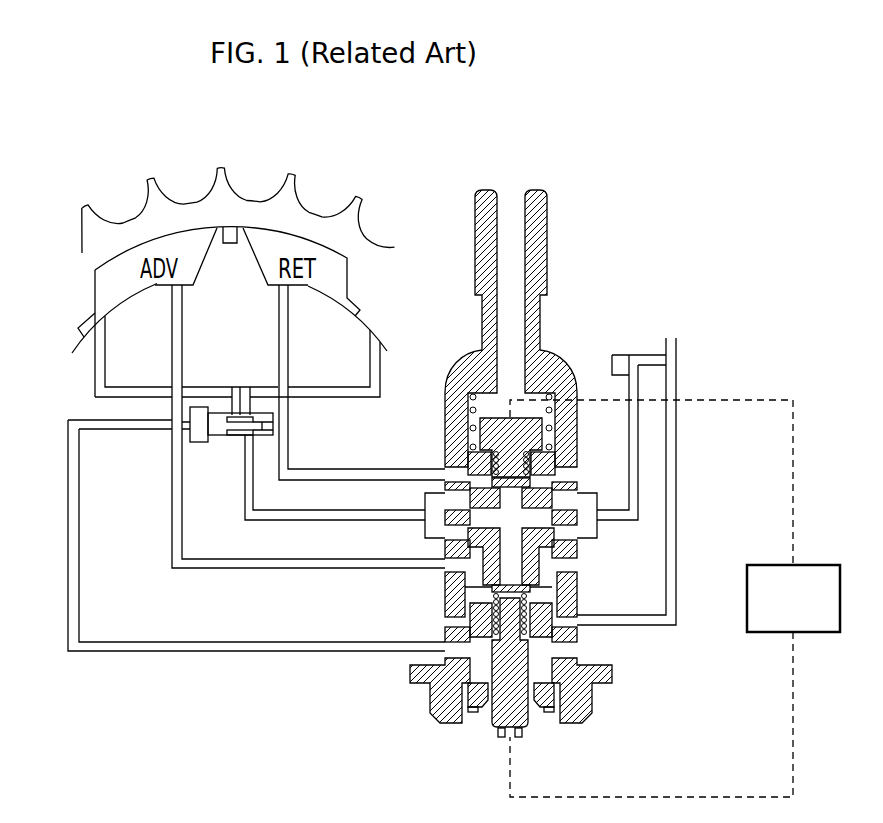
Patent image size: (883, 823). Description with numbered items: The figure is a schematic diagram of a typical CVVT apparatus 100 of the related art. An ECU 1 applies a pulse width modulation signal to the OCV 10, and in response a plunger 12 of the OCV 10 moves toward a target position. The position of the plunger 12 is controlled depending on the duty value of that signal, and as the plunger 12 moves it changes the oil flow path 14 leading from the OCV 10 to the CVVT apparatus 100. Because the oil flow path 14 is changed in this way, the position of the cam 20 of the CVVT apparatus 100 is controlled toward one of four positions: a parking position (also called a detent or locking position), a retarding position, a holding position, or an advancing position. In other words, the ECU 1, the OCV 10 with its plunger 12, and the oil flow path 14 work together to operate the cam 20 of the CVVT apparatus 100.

The ECU 1 is at (824, 567).
The OCV 10 is at (550, 343).
The plunger 12 is at (518, 440).
The oil flow path 14 is at (298, 475).
The cam 20 is at (313, 182).
The CVVT apparatus 100 is at (608, 151).